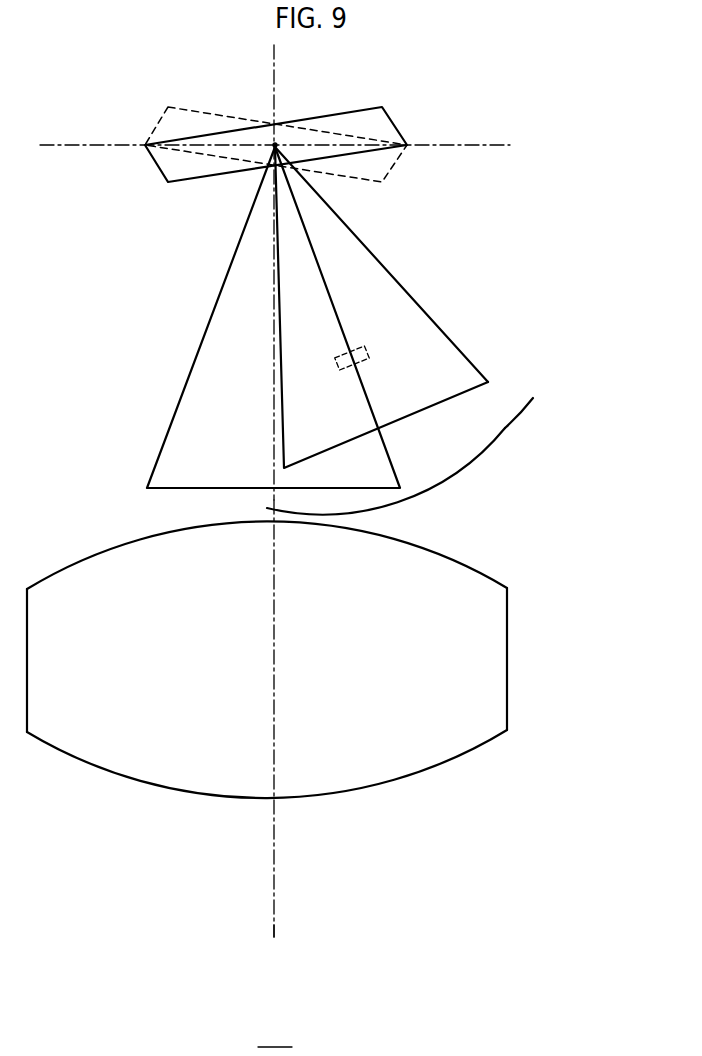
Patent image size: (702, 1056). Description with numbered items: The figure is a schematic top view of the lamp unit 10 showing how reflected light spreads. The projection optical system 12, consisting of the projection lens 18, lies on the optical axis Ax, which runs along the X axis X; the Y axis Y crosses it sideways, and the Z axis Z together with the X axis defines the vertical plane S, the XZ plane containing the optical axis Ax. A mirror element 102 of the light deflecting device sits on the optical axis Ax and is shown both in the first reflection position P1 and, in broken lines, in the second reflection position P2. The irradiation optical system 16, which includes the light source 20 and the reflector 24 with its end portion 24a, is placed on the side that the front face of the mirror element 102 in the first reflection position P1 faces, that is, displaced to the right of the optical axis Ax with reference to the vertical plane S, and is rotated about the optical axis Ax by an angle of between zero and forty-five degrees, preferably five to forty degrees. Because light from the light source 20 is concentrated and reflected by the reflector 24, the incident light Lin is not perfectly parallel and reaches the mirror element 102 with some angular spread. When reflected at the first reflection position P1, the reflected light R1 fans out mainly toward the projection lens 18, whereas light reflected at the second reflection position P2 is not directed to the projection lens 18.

The mirror element 102 is at (304, 108).
The first reflection position P1 is at (383, 110).
The second reflection position P2 is at (165, 110).
The Z axis Z is at (275, 144).
The Y axis Y is at (287, 144).
The X axis X is at (275, 946).
The optical axis Ax is at (275, 885).
The incident light Lin is at (378, 287).
The light source 20 is at (362, 347).
The reflected light R1 is at (218, 350).
The vertical plane S is at (253, 317).
The reflector 24 is at (446, 432).
The reflector end portion 24a is at (512, 432).
The irradiation optical system 16 is at (436, 443).
The projection optical system 12 is at (322, 659).
The projection lens 18 is at (508, 653).
The lamp unit 10 is at (275, 1033).